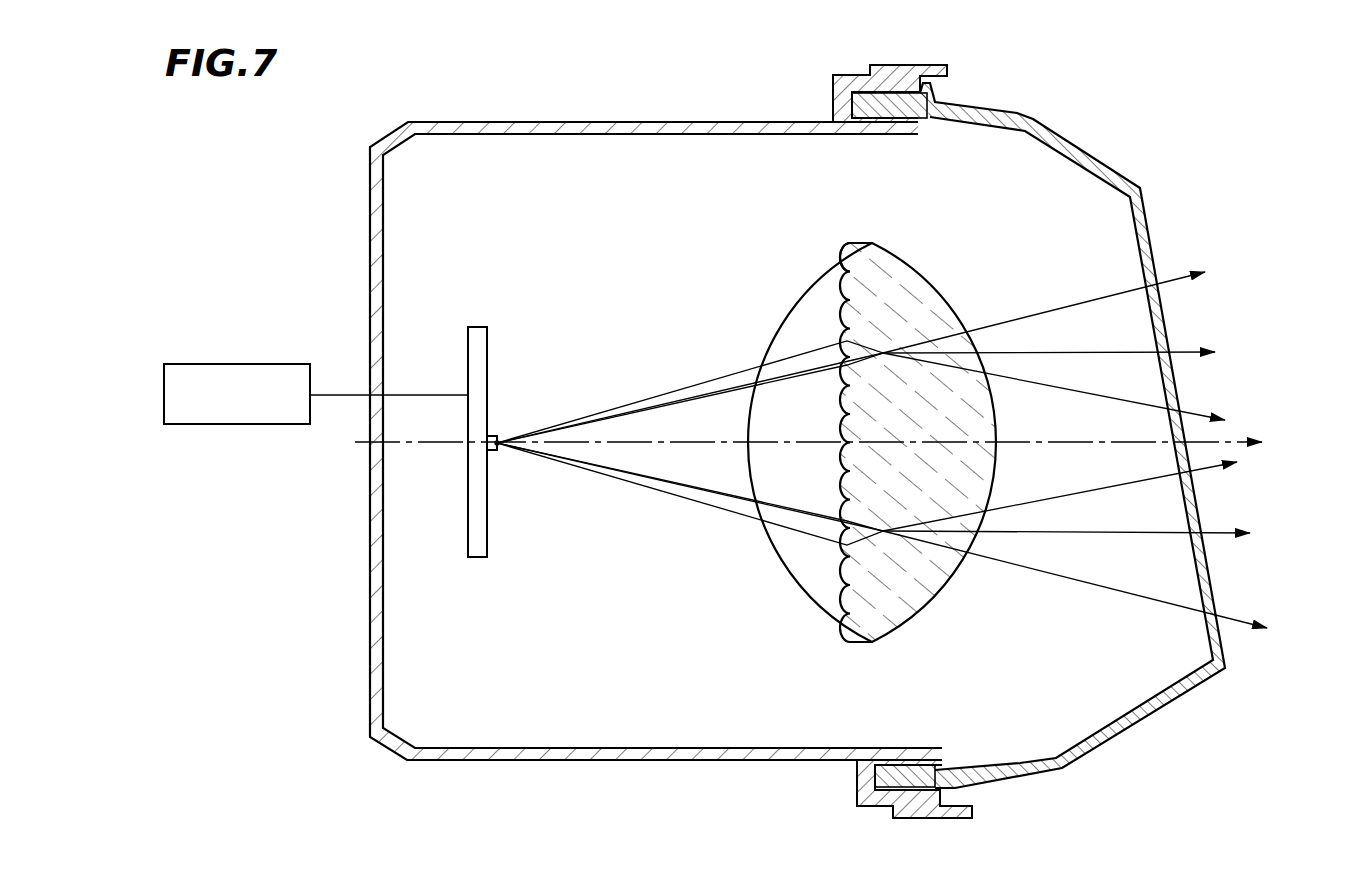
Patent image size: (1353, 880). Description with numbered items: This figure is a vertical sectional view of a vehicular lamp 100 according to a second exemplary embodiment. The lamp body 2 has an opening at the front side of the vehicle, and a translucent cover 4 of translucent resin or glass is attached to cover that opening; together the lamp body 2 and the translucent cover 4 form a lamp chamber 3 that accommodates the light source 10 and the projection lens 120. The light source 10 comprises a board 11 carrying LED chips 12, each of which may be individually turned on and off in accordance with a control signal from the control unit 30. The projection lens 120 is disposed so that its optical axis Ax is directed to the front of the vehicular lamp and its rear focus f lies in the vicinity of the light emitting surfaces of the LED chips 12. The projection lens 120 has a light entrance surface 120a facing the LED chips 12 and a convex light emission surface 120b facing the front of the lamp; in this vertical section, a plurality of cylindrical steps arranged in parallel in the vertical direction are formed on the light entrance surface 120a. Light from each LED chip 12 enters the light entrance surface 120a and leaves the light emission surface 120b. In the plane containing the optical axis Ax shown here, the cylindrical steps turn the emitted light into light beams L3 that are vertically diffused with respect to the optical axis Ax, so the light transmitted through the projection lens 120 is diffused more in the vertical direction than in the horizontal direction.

The lamp body 2 is at (465, 762).
The lamp chamber 3 is at (1149, 675).
The translucent cover 4 is at (1112, 740).
The light source 10 is at (519, 426).
The board 11 is at (485, 545).
The LED chip 12 is at (505, 450).
The control unit 30 is at (245, 362).
The vehicular lamp 100 is at (687, 841).
The projection lens 120 is at (885, 390).
The light entrance surface 120a is at (840, 560).
The light emission surface 120b is at (905, 620).
The rear focus f is at (505, 437).
The light beams L3 is at (1072, 630).
The optical axis Ax is at (833, 442).